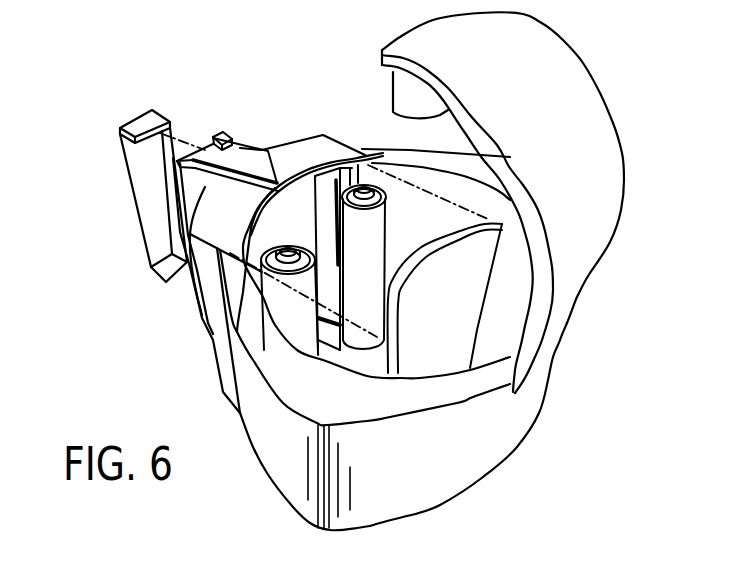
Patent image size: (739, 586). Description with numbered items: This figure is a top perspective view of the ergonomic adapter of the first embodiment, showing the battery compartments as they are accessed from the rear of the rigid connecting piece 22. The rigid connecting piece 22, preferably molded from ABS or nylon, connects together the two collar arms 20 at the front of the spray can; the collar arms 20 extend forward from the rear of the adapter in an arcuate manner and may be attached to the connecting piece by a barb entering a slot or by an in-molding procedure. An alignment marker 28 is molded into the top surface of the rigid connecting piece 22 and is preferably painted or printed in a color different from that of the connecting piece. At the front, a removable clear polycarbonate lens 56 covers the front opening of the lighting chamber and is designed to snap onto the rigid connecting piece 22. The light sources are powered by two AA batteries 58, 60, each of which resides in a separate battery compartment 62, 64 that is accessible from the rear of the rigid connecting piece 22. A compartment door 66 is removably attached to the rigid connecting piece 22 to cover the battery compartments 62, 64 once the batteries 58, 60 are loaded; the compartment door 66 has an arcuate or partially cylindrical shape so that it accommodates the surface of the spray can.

The collar arms 20 is at (385, 157).
The rigid connecting piece 22 is at (213, 336).
The alignment marker 28 is at (238, 165).
The clear polycarbonate lens 56 is at (140, 163).
The AA battery 58 is at (316, 331).
The AA battery 60 is at (377, 280).
The battery compartment 62 is at (248, 258).
The battery compartment 64 is at (327, 187).
The compartment door 66 is at (449, 321).